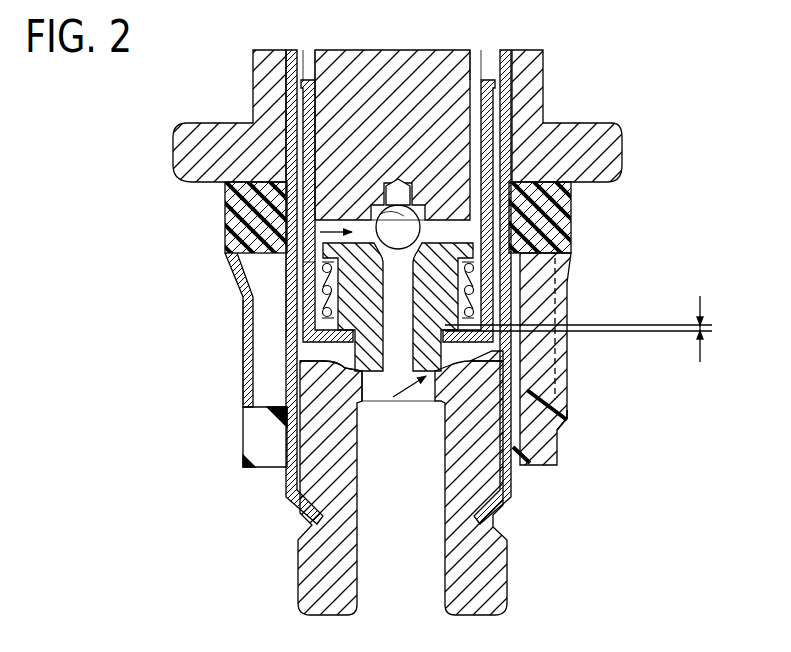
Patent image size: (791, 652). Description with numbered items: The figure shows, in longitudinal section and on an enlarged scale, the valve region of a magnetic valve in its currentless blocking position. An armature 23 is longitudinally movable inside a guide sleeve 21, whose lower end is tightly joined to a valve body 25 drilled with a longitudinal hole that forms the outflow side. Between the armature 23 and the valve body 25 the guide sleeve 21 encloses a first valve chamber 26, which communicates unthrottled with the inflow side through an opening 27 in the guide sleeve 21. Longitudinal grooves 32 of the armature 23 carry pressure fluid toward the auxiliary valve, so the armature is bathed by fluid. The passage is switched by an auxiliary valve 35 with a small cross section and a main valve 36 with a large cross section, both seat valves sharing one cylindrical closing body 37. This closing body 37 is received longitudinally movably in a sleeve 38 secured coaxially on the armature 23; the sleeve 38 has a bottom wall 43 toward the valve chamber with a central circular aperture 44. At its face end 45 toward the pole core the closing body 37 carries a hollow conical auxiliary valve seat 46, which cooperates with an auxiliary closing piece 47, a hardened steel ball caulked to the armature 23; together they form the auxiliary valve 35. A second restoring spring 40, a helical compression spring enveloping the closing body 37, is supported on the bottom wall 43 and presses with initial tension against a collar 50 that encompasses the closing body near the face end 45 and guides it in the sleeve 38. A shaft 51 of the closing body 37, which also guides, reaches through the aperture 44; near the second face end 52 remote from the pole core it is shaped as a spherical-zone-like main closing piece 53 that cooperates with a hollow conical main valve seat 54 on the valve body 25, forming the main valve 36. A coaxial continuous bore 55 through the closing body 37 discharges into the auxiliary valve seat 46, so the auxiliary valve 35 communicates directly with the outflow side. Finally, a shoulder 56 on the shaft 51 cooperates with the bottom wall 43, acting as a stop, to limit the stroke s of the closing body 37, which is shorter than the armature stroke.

The guide sleeve 21 is at (292, 50).
The armature 23 is at (422, 77).
The valve body 25 is at (487, 562).
The first valve chamber 26 is at (307, 353).
The opening 27 is at (290, 340).
The longitudinal groove 32 is at (483, 63).
The auxiliary valve 35 is at (357, 231).
The main valve 36 is at (297, 497).
The closing body 37 is at (325, 300).
The sleeve 38 is at (483, 127).
The second restoring spring 40 is at (527, 290).
The bottom wall 43 is at (483, 340).
The central circular aperture 44 is at (567, 418).
The face end 45 is at (224, 233).
The auxiliary valve seat 46 is at (300, 283).
The auxiliary closing piece 47 is at (375, 207).
The collar 50 is at (513, 252).
The shaft 51 is at (250, 317).
The second face end 52 is at (287, 463).
The main closing piece 53 is at (280, 390).
The main valve seat 54 is at (287, 420).
The continuous bore 55 is at (570, 188).
The shoulder 56 is at (527, 312).